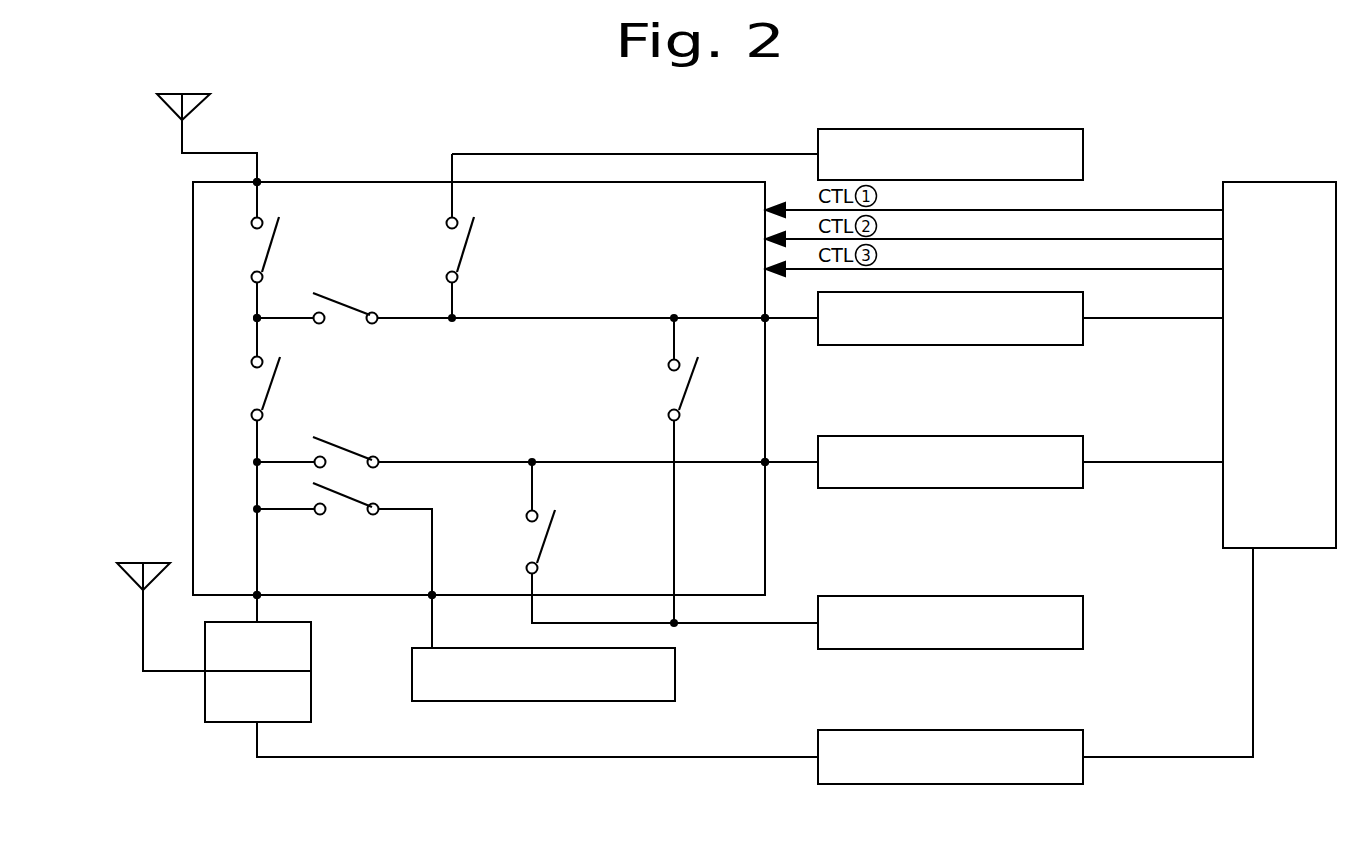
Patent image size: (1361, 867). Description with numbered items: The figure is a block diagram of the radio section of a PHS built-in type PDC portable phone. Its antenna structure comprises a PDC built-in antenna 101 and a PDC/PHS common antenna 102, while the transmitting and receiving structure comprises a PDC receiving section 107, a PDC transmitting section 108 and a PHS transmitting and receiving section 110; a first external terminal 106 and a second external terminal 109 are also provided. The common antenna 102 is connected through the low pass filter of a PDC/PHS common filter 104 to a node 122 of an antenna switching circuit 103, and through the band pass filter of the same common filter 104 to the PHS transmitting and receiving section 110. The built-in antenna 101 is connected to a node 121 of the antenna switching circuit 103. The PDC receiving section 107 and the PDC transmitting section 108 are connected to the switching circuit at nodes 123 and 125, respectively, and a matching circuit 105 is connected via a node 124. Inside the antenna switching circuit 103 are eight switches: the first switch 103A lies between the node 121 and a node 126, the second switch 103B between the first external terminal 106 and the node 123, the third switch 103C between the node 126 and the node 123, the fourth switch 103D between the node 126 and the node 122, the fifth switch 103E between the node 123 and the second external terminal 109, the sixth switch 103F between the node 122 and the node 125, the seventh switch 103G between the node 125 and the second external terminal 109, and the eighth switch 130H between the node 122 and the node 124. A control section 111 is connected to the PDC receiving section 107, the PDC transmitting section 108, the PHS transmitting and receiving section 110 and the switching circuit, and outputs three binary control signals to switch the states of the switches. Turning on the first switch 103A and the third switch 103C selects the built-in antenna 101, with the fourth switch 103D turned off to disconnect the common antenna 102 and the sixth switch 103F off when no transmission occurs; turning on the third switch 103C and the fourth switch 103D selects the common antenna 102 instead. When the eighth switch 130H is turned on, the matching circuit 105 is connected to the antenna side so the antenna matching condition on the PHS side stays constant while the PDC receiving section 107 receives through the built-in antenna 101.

The built-in antenna 101 is at (198, 100).
The PDC/PHS common antenna 102 is at (130, 572).
The antenna switching circuit 103 is at (193, 200).
The switch SW1 103A is at (279, 219).
The switch SW2 103B is at (474, 219).
The switch SW3 103C is at (345, 300).
The switch SW4 103D is at (280, 358).
The switch SW5 103E is at (721, 340).
The switch SW6 103F is at (345, 445).
The switch SW7 103G is at (555, 512).
The switch SW8 130H is at (345, 493).
The PDC/PHS common filter 104 is at (205, 697).
The matching circuit 105 is at (610, 701).
The external terminal 106 is at (1018, 129).
The PDC receiving section 107 is at (1017, 345).
The PDC transmitting section 108 is at (1017, 488).
The external terminal 109 is at (1017, 649).
The PHS transmitting and receiving section 110 is at (1017, 784).
The control section 111 is at (1292, 548).
The node 121 is at (258, 181).
The node 122 is at (258, 596).
The node 123 is at (766, 319).
The node 124 is at (433, 596).
The node 125 is at (766, 463).
The node 126 is at (256, 319).